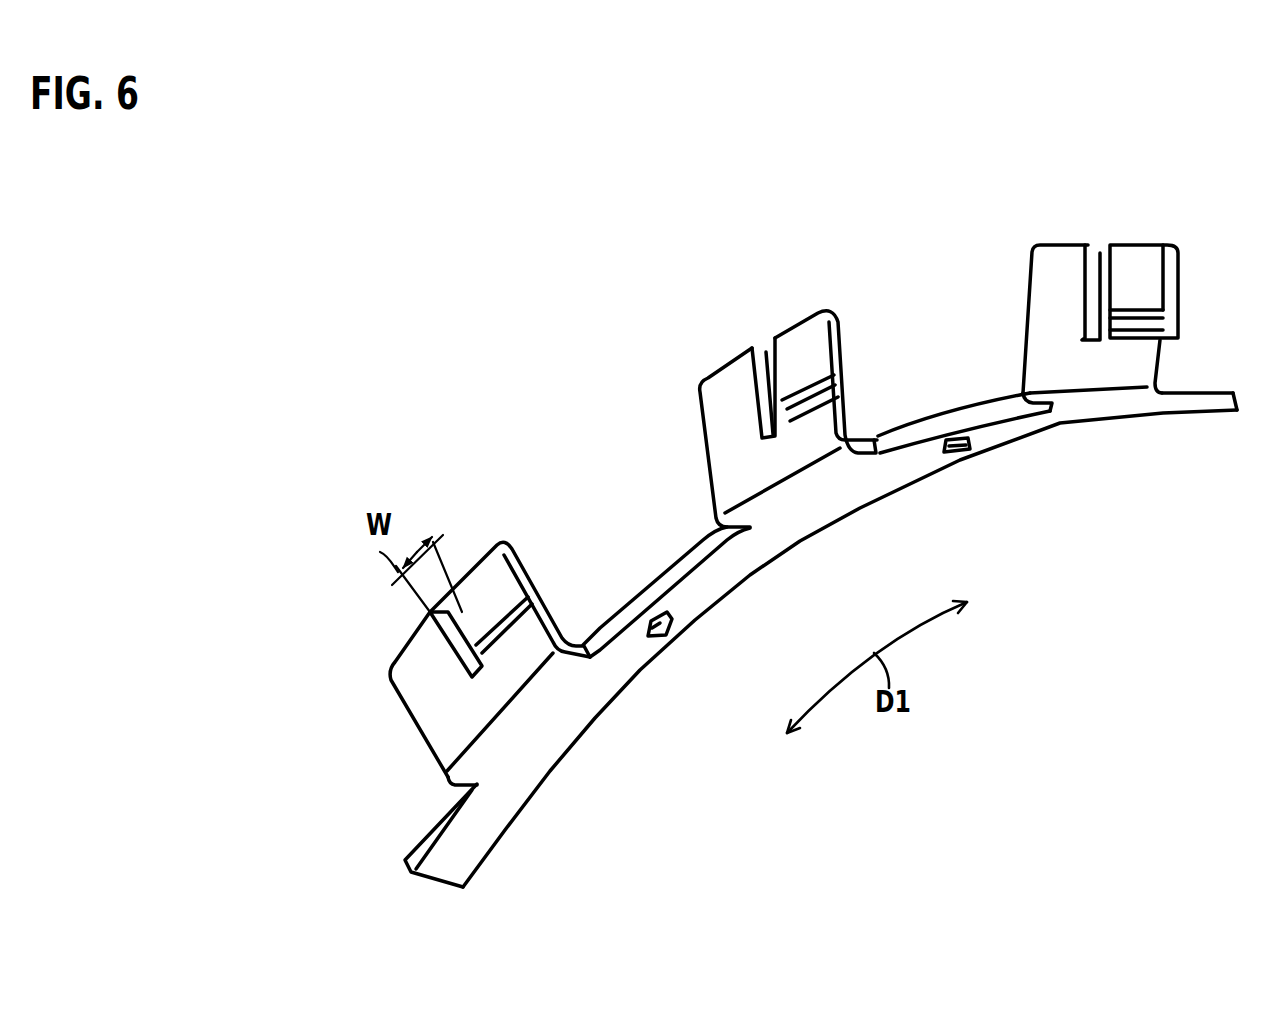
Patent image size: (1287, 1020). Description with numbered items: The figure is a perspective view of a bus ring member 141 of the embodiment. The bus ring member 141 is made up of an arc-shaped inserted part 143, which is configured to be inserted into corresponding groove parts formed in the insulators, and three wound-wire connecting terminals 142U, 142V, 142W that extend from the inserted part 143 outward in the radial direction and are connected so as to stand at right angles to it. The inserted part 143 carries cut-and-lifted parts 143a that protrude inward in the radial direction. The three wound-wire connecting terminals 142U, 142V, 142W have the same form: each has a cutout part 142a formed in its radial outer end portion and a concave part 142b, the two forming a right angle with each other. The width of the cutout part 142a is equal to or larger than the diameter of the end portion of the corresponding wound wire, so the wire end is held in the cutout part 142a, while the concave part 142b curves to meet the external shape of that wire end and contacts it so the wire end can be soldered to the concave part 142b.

The bus ring member 141 is at (957, 116).
The wound-wire connecting terminal 142U is at (1062, 243).
The wound-wire connecting terminal 142V is at (406, 648).
The wound-wire connecting terminal 142W is at (715, 385).
The cutout part 142a is at (448, 609).
The concave part 142b is at (538, 602).
The inserted part 143 is at (821, 637).
The cut-and-lifted part 143a is at (660, 640).